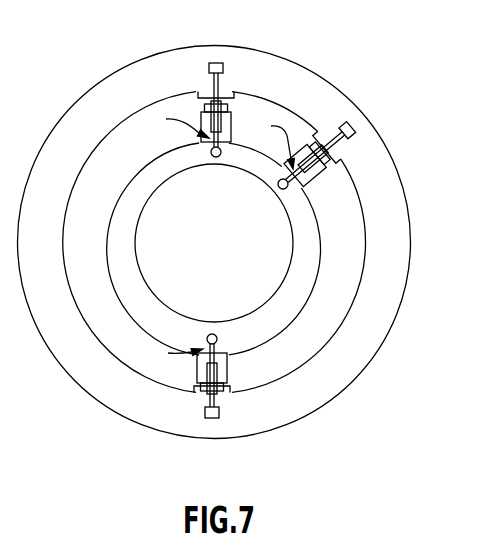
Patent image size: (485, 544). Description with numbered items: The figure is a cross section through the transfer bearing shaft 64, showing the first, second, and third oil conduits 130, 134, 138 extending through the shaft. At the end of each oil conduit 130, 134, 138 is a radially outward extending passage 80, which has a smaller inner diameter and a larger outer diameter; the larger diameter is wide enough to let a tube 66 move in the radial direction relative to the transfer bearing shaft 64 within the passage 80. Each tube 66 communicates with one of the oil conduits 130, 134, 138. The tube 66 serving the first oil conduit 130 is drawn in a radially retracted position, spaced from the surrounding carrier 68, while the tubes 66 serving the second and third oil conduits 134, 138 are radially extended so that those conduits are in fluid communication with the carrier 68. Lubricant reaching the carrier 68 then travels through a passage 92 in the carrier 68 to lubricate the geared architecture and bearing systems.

The transfer bearing shaft 64 is at (290, 264).
The tube 66 is at (203, 114).
The carrier 68 is at (410, 223).
The radially outward extending passage 80 is at (216, 236).
The passage 92 is at (216, 63).
The first oil conduit 130 is at (216, 157).
The second oil conduit 134 is at (280, 189).
The third oil conduit 138 is at (212, 334).